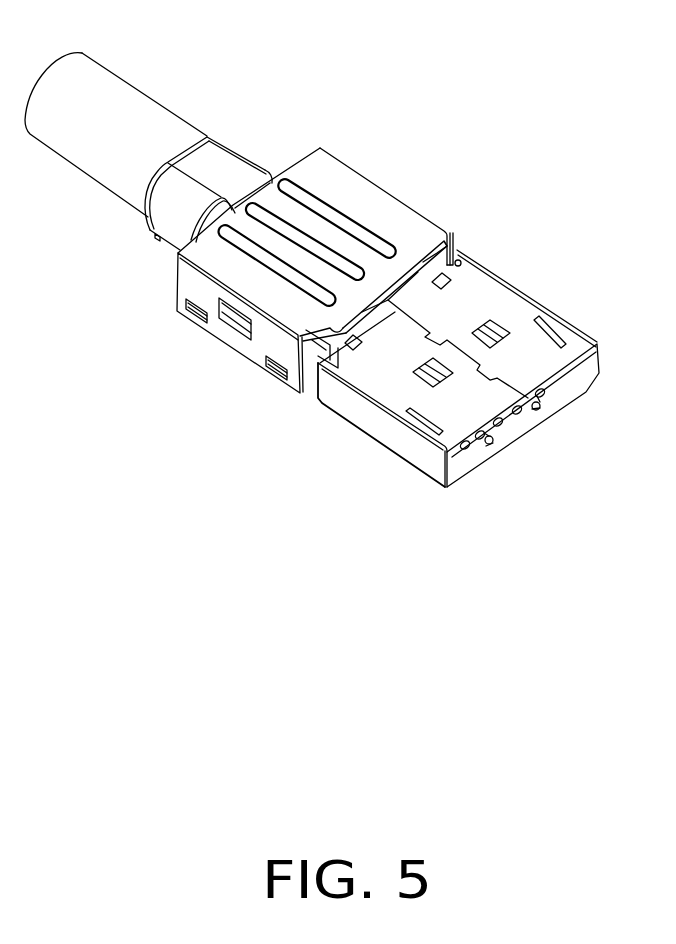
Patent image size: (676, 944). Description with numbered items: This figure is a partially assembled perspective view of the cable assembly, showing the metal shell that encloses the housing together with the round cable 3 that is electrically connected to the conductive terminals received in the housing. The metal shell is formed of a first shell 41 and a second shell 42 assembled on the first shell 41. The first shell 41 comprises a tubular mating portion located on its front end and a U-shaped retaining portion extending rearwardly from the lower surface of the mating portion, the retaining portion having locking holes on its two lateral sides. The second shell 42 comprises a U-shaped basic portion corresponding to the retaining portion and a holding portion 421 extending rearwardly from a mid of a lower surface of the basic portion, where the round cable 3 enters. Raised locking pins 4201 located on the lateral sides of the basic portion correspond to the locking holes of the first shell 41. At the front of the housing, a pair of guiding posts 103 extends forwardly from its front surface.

The round cable 3 is at (138, 118).
The holding portion 421 is at (218, 166).
The second shell 42 is at (275, 241).
The locking pin 4201 is at (236, 316).
The first shell 41 is at (378, 427).
The guiding posts 103 is at (484, 441).